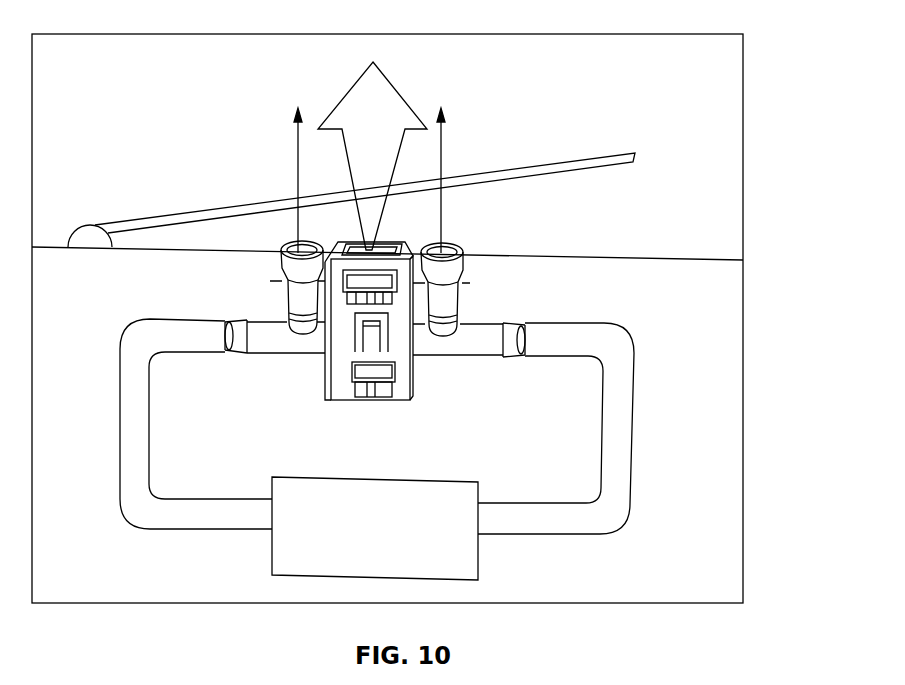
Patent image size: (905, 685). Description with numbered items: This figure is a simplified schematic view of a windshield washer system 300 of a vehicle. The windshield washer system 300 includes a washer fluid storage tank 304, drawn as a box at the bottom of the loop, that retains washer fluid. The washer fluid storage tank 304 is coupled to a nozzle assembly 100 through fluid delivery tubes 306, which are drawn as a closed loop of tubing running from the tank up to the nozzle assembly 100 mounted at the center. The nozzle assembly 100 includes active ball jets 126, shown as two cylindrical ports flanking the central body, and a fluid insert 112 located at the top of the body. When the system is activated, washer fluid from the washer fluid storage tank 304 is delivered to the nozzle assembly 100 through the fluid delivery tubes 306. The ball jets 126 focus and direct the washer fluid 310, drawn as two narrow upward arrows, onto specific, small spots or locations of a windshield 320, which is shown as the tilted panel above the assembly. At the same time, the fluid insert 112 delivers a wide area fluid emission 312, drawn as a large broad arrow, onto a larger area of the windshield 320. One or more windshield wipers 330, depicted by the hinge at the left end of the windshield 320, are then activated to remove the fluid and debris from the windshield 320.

The nozzle assembly 100 is at (430, 299).
The fluid insert 112 is at (393, 242).
The active ball jets 126 is at (283, 250).
The windshield washer system 300 is at (647, 332).
The washer fluid storage tank 304 is at (479, 555).
The fluid delivery tubes 306 is at (165, 520).
The washer fluid 310 is at (298, 152).
The wide area fluid emission 312 is at (360, 78).
The windshield 320 is at (723, 173).
The windshield wipers 330 is at (175, 221).